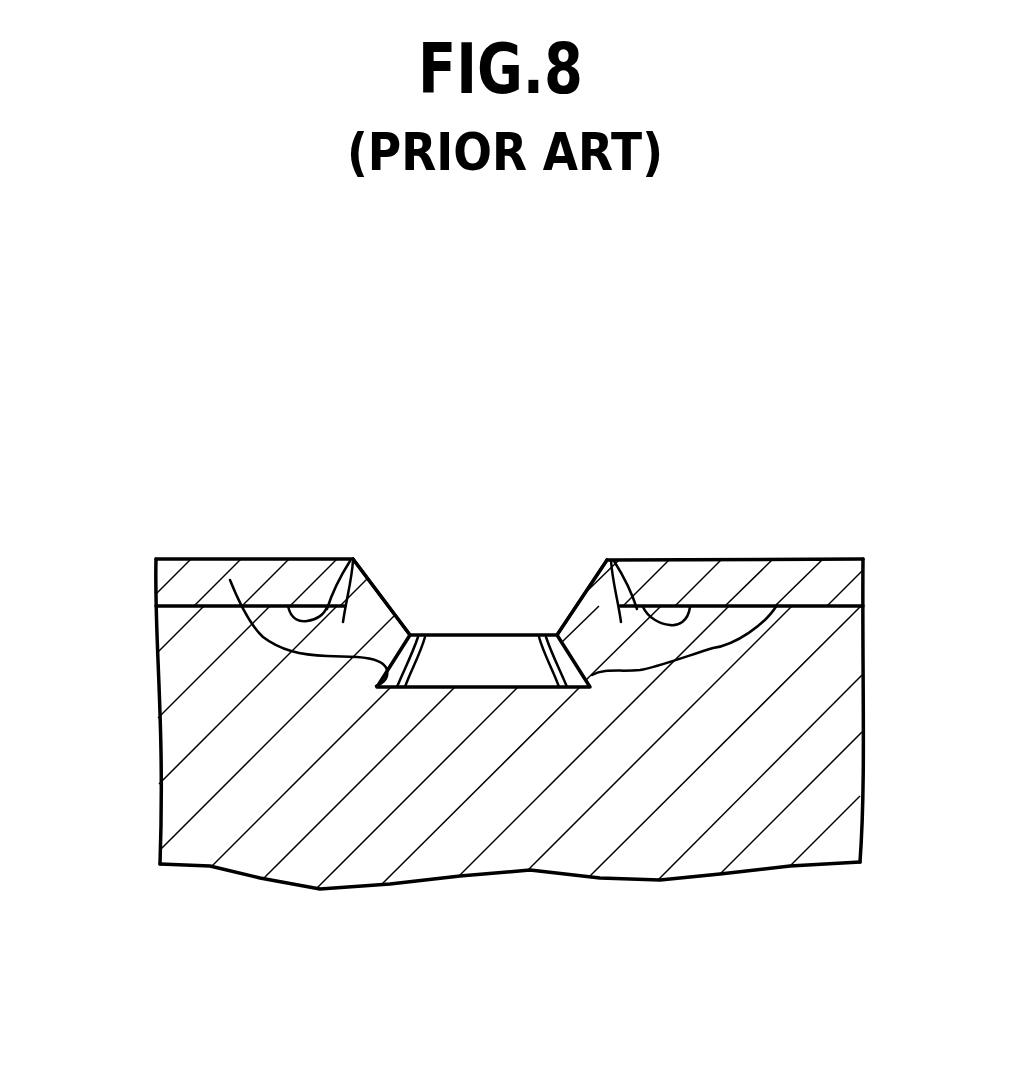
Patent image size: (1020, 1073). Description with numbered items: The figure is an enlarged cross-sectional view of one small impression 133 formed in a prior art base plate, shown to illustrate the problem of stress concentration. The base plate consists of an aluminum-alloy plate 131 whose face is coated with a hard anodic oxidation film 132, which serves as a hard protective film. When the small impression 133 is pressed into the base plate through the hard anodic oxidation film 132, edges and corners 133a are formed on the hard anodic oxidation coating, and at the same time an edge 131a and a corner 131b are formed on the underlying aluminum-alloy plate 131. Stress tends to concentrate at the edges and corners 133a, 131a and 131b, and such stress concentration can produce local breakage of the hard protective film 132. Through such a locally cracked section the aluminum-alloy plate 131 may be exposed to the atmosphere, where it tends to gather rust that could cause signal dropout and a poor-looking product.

The aluminum-alloy plate 131 is at (177, 697).
The hard anodic oxidation film 132 is at (172, 575).
The small impression 133 is at (485, 612).
The edges and corners of the hard anodic oxidation coating 133a is at (618, 470).
The edge of the aluminum-alloy plate 131a is at (260, 480).
The corner of the aluminum-alloy plate 131b is at (187, 502).